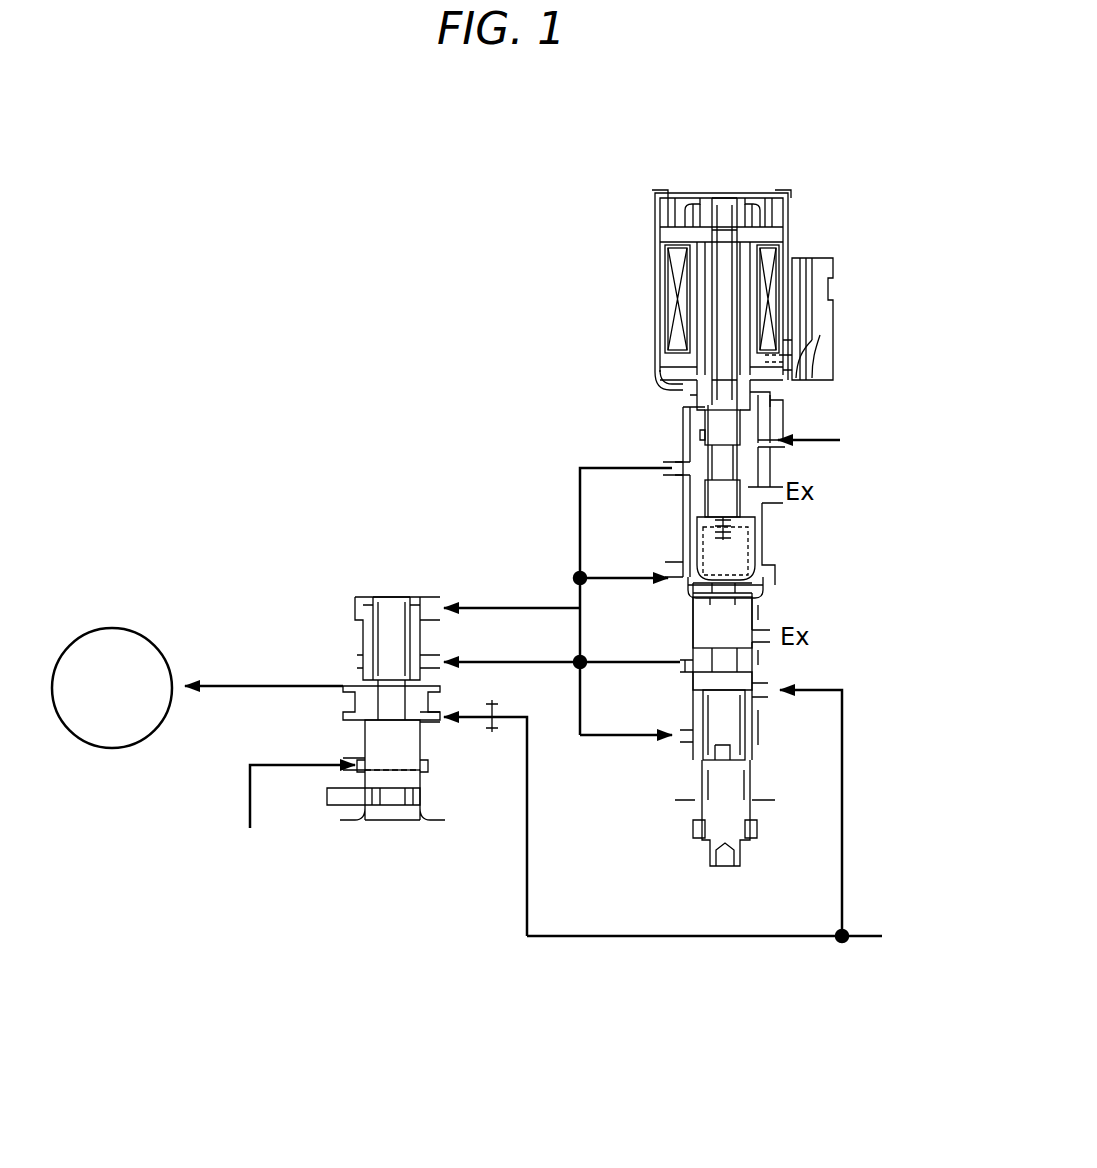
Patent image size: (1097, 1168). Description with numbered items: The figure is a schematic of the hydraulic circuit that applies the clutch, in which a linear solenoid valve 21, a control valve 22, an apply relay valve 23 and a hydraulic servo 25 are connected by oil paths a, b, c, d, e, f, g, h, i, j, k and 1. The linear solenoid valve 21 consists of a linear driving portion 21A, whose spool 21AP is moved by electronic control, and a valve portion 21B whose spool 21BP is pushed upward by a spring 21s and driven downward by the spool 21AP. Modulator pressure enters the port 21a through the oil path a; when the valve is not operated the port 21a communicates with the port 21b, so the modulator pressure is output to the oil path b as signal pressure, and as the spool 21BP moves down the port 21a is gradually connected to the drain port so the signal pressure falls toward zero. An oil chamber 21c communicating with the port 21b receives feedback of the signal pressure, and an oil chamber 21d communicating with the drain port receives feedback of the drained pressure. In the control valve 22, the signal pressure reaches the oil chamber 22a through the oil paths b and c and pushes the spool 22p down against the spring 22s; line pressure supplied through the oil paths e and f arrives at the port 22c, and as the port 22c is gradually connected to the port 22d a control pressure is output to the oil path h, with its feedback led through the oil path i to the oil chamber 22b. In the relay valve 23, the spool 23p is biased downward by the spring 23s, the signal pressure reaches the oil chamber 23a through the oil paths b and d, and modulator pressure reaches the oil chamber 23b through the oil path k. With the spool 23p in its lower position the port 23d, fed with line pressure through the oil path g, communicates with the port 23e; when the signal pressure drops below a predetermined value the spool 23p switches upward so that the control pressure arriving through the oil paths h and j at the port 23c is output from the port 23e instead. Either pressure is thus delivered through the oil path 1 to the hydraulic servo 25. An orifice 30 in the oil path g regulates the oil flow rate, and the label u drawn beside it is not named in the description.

The oil path 1 is at (216, 684).
The linear solenoid valve for C-1 21 is at (765, 158).
The linear driving portion 21A is at (845, 298).
The spool 21AP is at (716, 238).
The valve portion 21B is at (822, 511).
The spool 21BP is at (706, 425).
The port 21a is at (764, 438).
The port 21b is at (672, 462).
The oil chamber 21c is at (706, 407).
The oil chamber 21d is at (735, 563).
The spring 21s is at (760, 540).
The control valve 22 is at (748, 872).
The oil chamber 22a is at (683, 585).
The oil chamber 22b is at (712, 738).
The port 22c is at (765, 688).
The port 22d is at (678, 668).
The spool 22p is at (742, 618).
The spring 22s is at (746, 708).
The C-1 apply relay valve 23 is at (375, 565).
The oil chamber 23a is at (393, 610).
The oil chamber 23b is at (345, 782).
The port 23c is at (430, 665).
The port 23d is at (425, 742).
The port 23e is at (345, 690).
The spool 23p is at (370, 748).
The spring 23s is at (356, 612).
The C-1 hydraulic servo 25 is at (118, 624).
The orifice 30 is at (492, 735).
The oil path a is at (815, 440).
The oil path b is at (582, 505).
The oil path c is at (612, 577).
The oil path d is at (502, 607).
The oil path e is at (855, 934).
The oil path f is at (844, 808).
The oil path g is at (688, 938).
The oil path h is at (605, 662).
The oil path i is at (585, 720).
The oil path j is at (545, 662).
The oil path k is at (262, 763).
The oil passage u is at (485, 818).